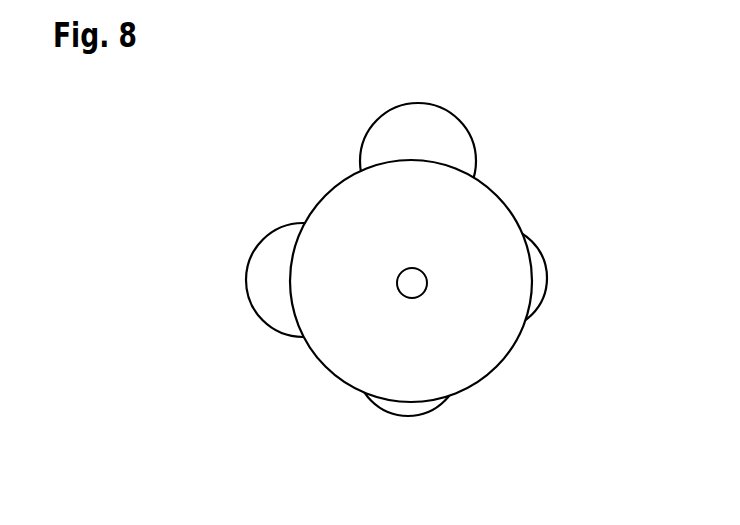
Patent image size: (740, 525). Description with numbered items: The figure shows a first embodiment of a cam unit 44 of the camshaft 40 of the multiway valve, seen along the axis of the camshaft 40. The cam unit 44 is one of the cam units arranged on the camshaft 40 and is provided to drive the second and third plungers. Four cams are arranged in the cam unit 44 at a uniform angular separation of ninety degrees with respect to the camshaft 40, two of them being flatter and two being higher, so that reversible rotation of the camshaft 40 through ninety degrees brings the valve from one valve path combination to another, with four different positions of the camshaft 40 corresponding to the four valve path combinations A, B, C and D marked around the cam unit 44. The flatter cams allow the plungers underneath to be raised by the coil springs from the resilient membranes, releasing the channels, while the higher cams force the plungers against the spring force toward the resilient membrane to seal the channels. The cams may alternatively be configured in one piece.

The cam unit 44 is at (290, 148).
The camshaft 40 is at (497, 362).